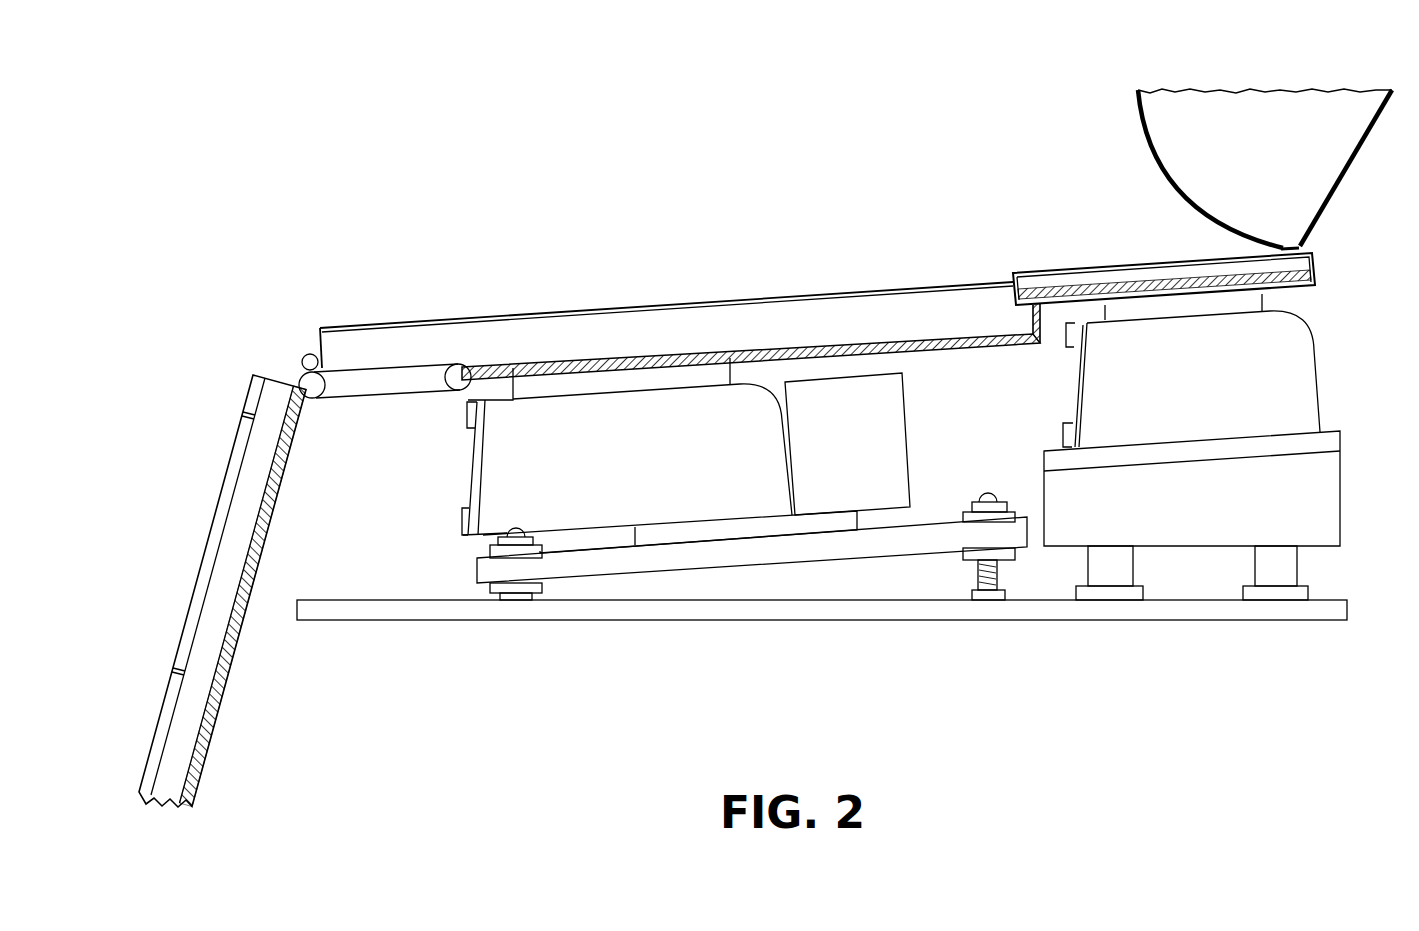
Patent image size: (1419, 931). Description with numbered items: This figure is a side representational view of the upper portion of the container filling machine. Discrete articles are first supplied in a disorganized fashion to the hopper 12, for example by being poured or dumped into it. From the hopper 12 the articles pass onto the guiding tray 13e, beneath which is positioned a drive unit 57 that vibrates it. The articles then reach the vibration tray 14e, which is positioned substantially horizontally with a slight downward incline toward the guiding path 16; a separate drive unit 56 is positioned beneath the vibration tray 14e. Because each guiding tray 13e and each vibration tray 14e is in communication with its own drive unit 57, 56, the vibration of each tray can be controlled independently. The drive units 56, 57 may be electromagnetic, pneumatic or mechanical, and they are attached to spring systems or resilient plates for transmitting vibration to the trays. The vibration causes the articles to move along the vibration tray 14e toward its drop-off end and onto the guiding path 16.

The hopper 12 is at (1173, 130).
The guiding tray 13e is at (1080, 246).
The vibration tray 14e is at (513, 291).
The guiding path 16 is at (176, 552).
The drive unit 56 is at (659, 455).
The drive unit 57 is at (1247, 367).